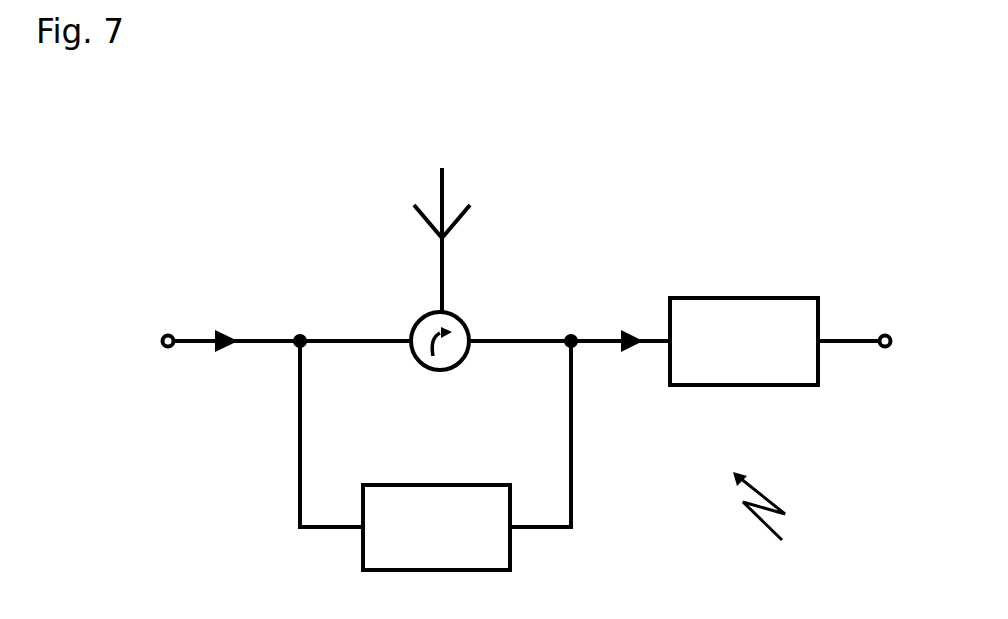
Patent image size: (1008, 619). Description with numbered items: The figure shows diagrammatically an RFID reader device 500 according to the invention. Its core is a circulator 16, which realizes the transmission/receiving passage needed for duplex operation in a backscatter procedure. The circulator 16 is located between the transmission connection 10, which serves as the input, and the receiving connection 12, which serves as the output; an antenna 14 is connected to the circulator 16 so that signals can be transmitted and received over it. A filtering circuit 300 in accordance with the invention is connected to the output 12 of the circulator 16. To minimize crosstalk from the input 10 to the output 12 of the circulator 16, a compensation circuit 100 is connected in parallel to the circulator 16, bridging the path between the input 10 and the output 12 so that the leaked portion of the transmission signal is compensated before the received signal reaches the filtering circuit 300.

The transmission connection 10 is at (205, 340).
The receiving connection 12 is at (556, 341).
The antenna 14 is at (444, 184).
The circulator 16 is at (457, 313).
The compensation circuit 100 is at (436, 527).
The filtering circuit 300 is at (744, 341).
The RFID reader device 500 is at (767, 525).